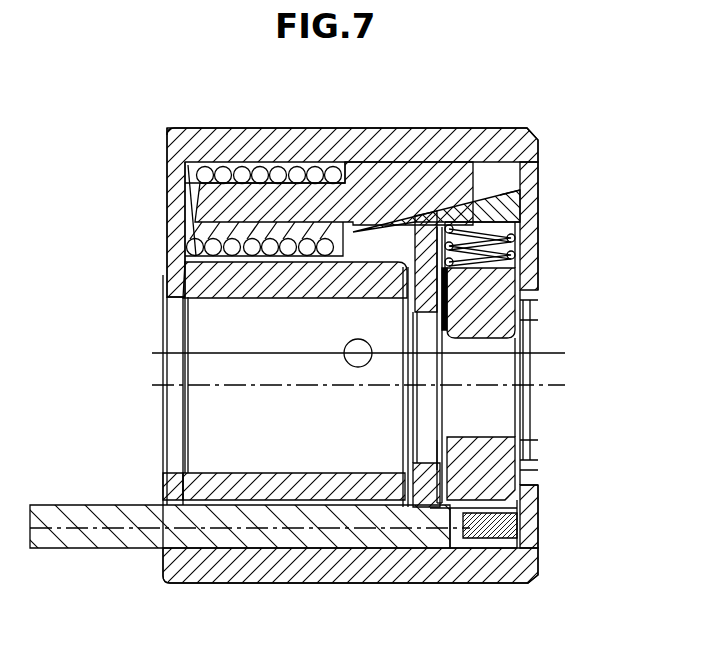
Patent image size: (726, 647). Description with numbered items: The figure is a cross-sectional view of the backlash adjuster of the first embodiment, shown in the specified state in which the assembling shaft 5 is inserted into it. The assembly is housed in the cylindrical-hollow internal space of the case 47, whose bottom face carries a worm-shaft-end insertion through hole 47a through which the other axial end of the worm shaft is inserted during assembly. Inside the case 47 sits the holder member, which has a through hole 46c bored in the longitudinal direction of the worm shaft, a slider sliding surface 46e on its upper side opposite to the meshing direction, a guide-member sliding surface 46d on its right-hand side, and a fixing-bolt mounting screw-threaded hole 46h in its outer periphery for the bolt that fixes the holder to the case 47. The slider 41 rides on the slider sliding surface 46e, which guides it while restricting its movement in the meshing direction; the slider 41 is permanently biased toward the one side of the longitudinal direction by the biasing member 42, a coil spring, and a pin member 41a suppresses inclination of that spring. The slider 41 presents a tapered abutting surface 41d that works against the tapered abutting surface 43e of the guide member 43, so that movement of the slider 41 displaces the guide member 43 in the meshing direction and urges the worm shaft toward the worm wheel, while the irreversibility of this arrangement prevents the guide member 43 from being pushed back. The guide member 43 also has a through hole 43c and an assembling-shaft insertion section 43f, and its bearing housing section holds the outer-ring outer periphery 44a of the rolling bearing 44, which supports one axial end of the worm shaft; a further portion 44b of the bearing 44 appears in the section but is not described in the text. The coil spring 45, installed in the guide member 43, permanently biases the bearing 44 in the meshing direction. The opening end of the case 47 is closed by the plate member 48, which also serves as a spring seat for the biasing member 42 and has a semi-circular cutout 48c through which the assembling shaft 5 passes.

The assembling shaft 5 is at (73, 547).
The slider 41 is at (463, 162).
The pin member 41a is at (208, 205).
The tapered abutting surface of the slider side 41d is at (358, 385).
The biasing member 42 is at (243, 168).
The guide member 43 is at (522, 193).
The through hole 43c is at (440, 458).
The tapered abutting surface of the guide member side 43e is at (520, 190).
The assembling-shaft insertion section 43f is at (435, 530).
The rolling bearing 44 is at (522, 315).
The outer-ring outer periphery 44a is at (518, 528).
The armature extension 44b is at (541, 368).
The coil spring 45 is at (522, 250).
The through hole 46c is at (247, 470).
The guide-member sliding surface 46d is at (449, 291).
The slider sliding surface 46e is at (395, 265).
The fixing-bolt mounting screw-threaded hole 46h is at (362, 366).
The case 47 is at (305, 130).
The worm-shaft-end insertion through hole 47a is at (538, 469).
The plate member 48 is at (167, 248).
The semi-circular cutout 48c is at (165, 497).